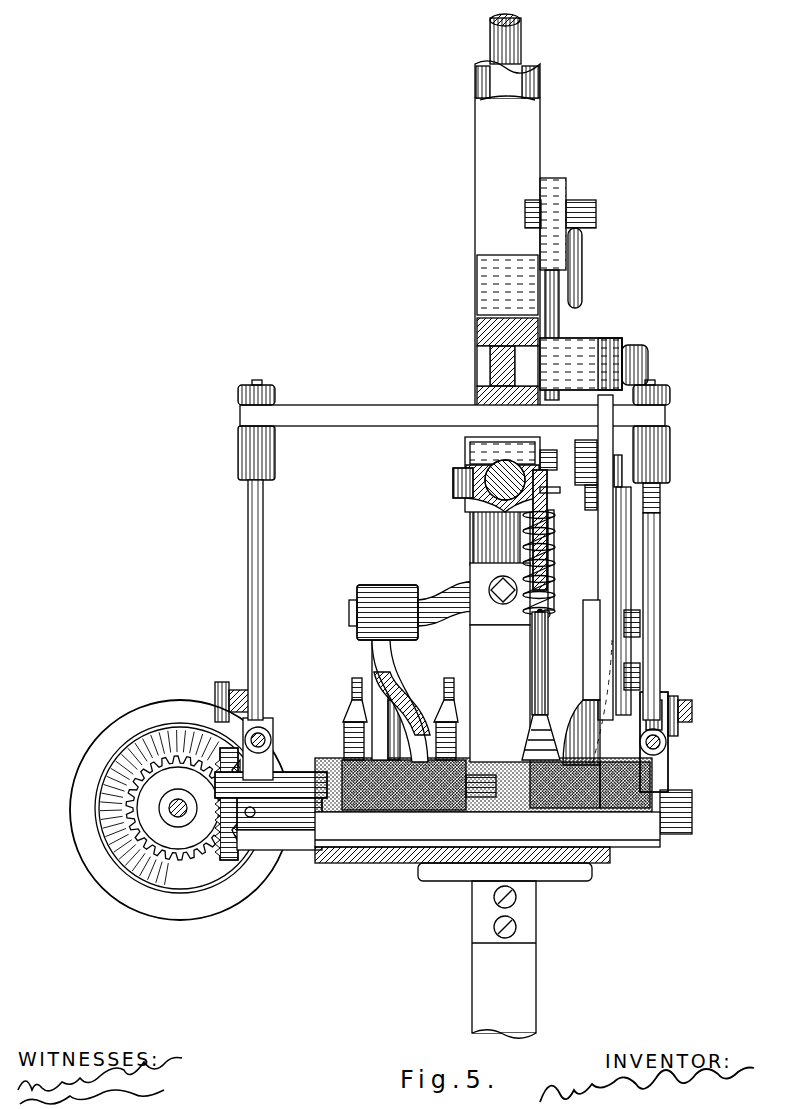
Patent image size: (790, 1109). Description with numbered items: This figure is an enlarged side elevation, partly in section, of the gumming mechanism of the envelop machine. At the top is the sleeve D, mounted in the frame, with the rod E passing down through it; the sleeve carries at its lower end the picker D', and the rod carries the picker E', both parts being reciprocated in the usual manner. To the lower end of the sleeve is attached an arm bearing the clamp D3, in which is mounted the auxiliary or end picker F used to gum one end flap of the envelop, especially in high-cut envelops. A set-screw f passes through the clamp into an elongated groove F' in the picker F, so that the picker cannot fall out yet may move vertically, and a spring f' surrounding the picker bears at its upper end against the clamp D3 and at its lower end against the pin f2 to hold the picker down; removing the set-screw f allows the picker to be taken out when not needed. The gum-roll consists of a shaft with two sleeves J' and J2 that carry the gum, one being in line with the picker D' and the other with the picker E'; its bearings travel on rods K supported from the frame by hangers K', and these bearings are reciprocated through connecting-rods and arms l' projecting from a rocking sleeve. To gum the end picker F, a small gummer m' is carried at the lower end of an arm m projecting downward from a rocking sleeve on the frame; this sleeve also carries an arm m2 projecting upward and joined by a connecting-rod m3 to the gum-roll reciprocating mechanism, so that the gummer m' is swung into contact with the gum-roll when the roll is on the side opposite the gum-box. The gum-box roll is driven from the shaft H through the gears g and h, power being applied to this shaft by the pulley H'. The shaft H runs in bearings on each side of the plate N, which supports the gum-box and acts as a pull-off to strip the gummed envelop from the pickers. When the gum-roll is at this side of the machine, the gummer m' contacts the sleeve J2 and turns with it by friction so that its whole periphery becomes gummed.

The rod E is at (499, 319).
The sleeve D is at (519, 234).
The connecting-rod m3 is at (582, 270).
The arm m2 is at (562, 328).
The clamp D3 is at (485, 462).
The set-screw f is at (559, 560).
The elongated groove F' is at (567, 560).
The spring f' is at (552, 563).
The pin f2 is at (550, 613).
The arm m is at (641, 580).
The hanger K' is at (467, 600).
The picker E' is at (412, 671).
The auxiliary or end picker F is at (535, 682).
The picker D' is at (666, 745).
The arm l' is at (456, 703).
The rod K is at (472, 742).
The pulley H' is at (164, 810).
The gear h is at (140, 805).
The shaft H is at (174, 816).
The gear g is at (226, 855).
The plate N is at (368, 858).
The sleeve J' is at (487, 802).
The gummer m' is at (444, 799).
The sleeve J2 is at (586, 800).